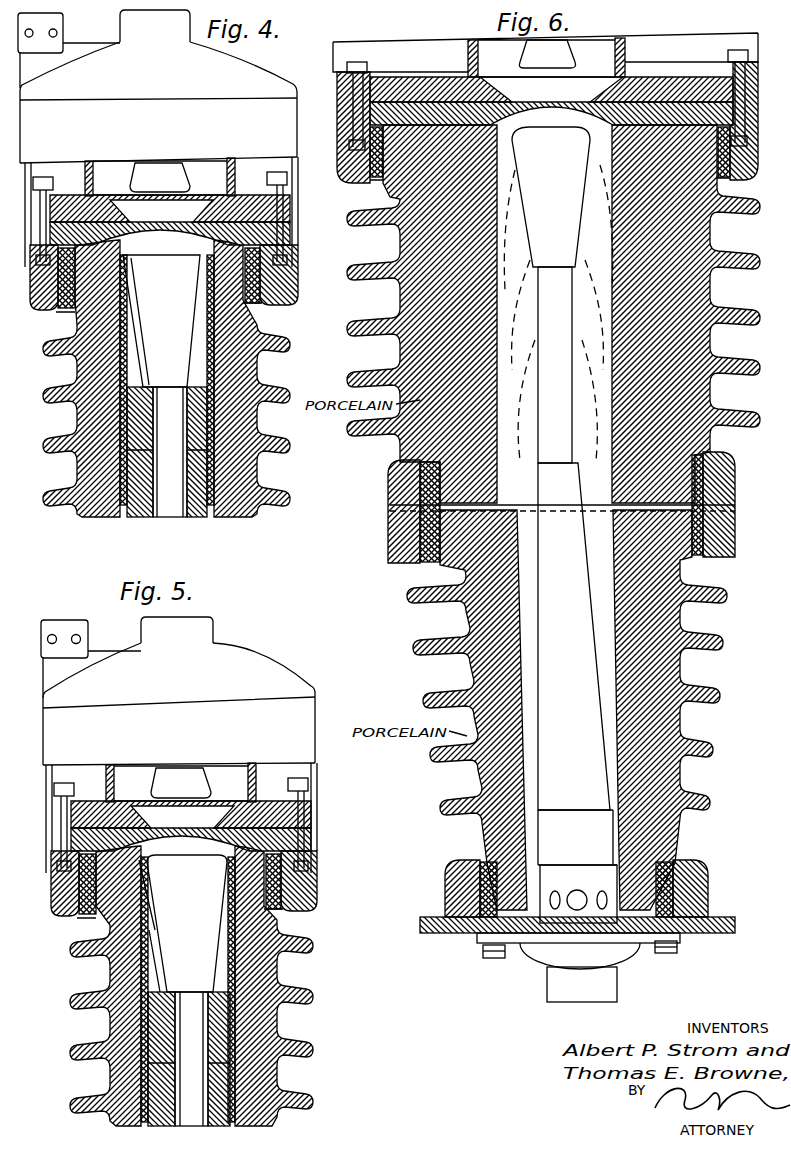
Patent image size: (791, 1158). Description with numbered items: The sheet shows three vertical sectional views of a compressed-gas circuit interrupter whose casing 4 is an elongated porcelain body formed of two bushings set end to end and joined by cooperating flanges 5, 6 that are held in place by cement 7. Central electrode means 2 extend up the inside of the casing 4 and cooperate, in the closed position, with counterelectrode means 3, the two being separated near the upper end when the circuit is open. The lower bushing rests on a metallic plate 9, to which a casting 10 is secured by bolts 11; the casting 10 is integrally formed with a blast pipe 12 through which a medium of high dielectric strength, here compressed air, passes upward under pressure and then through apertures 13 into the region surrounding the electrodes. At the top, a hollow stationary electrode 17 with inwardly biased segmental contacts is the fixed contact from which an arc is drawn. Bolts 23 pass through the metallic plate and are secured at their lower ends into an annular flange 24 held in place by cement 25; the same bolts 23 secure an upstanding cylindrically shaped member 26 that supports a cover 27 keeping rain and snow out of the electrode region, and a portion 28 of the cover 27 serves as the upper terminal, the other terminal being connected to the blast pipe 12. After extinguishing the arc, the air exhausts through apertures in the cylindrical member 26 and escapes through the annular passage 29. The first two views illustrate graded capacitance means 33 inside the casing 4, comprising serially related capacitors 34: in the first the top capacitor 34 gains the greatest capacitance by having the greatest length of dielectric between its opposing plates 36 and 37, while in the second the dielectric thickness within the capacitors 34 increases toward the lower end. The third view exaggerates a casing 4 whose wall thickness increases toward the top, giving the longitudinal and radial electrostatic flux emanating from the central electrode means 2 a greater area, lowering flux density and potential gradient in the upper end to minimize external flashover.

In FIG. 4, the central electrode means 2 is at (177, 508).
In FIG. 5, the central electrode means 2 is at (200, 1116).
In FIG. 6, the central electrode means 2 is at (560, 206).
In FIG. 4, the counterelectrode means 3 is at (213, 184).
In FIG. 5, the counterelectrode means 3 is at (238, 786).
In FIG. 6, the counterelectrode means 3 is at (600, 67).
In FIG. 4, the casing 4 is at (283, 333).
In FIG. 5, the casing 4 is at (293, 984).
In FIG. 6, the casing 4 is at (747, 317).
In FIG. 6, the flange 5 is at (735, 490).
In FIG. 6, the flange 6 is at (736, 514).
In FIG. 6, the cement 7 is at (707, 560).
In FIG. 6, the metallic plate 9 is at (728, 906).
In FIG. 6, the casting 10 is at (633, 958).
In FIG. 6, the bolts 11 is at (667, 952).
In FIG. 6, the blast pipe 12 is at (617, 993).
In FIG. 6, the apertures 13 is at (560, 893).
In FIG. 4, the stationary electrode 17 is at (133, 175).
In FIG. 5, the stationary electrode 17 is at (156, 785).
In FIG. 6, the stationary electrode 17 is at (527, 54).
In FIG. 4, the bolts 23 is at (277, 175).
In FIG. 5, the bolts 23 is at (298, 781).
In FIG. 6, the bolts 23 is at (728, 53).
In FIG. 4, the annular flange 24 is at (293, 287).
In FIG. 5, the annular flange 24 is at (180, 884).
In FIG. 6, the annular flange 24 is at (732, 166).
In FIG. 4, the cement 25 is at (261, 307).
In FIG. 5, the cement 25 is at (290, 913).
In FIG. 6, the cement 25 is at (723, 174).
In FIG. 4, the cylindrically shaped member 26 is at (89, 162).
In FIG. 5, the cylindrically shaped member 26 is at (110, 767).
In FIG. 6, the cylindrically shaped member 26 is at (473, 40).
In FIG. 4, the cover 27 is at (270, 74).
In FIG. 5, the cover 27 is at (277, 662).
In FIG. 4, the portion of the cover 28 is at (64, 23).
In FIG. 5, the portion of the cover 28 is at (41, 630).
In FIG. 4, the annular passage 29 is at (300, 268).
In FIG. 5, the annular passage 29 is at (320, 874).
In FIG. 6, the annular passage 29 is at (758, 152).
In FIG. 4, the capacitance means 33 is at (110, 348).
In FIG. 5, the capacitance means 33 is at (188, 989).
In FIG. 4, the capacitors 34 is at (127, 351).
In FIG. 5, the capacitors 34 is at (150, 940).
In FIG. 4, the plate 36 is at (117, 297).
In FIG. 4, the plate 37 is at (127, 275).